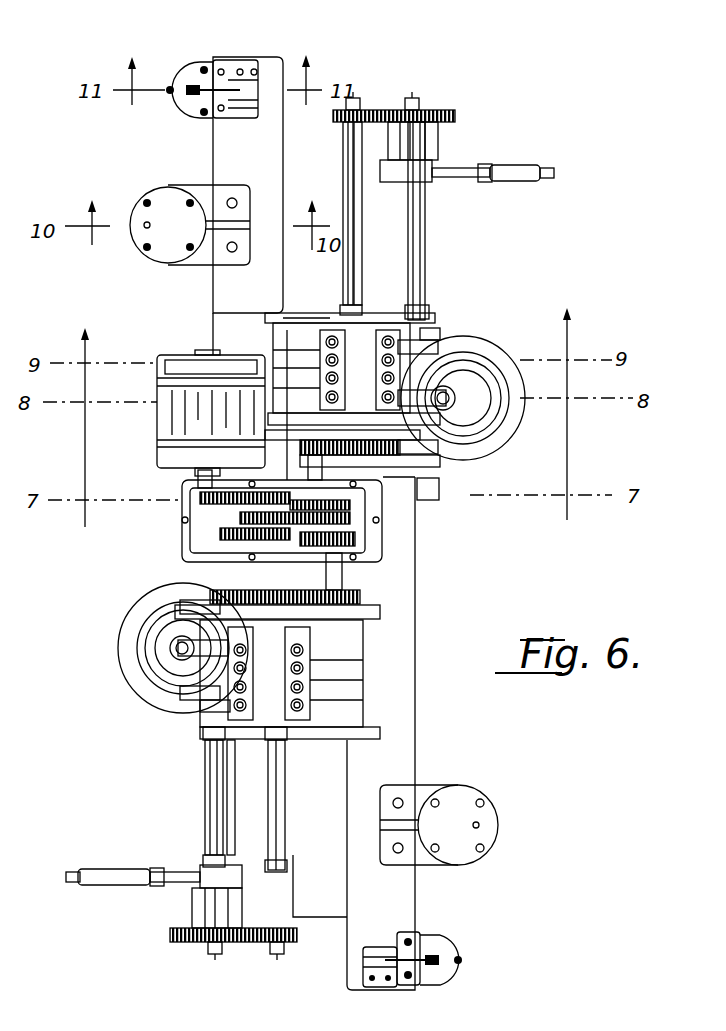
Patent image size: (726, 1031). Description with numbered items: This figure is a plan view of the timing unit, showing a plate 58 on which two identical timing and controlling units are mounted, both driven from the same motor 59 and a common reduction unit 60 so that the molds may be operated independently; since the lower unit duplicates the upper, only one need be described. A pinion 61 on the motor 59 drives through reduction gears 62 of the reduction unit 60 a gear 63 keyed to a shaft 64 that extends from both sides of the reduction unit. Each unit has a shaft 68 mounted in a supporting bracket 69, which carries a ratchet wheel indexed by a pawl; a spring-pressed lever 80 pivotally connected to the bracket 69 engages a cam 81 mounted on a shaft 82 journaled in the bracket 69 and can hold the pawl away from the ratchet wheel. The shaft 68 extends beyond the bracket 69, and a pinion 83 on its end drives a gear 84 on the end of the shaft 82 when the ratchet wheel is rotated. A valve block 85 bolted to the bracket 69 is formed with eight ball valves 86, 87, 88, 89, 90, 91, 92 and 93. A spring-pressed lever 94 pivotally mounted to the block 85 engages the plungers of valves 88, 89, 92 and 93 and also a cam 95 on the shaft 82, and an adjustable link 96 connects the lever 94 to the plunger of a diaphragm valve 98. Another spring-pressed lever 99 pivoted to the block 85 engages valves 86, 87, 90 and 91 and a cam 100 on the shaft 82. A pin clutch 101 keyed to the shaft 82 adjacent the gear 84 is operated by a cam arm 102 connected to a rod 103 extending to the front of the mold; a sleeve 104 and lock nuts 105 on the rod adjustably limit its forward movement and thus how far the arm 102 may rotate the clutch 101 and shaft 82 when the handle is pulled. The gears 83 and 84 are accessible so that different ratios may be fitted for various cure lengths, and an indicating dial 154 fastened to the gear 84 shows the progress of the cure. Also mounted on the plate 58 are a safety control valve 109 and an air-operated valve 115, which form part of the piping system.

The plate 58 is at (390, 585).
The motor 59 is at (195, 415).
The reduction unit 60 is at (182, 540).
The pinion 61 is at (205, 485).
The reduction gears 62 is at (200, 512).
The gear 63 is at (383, 538).
The shaft 64 is at (417, 490).
The shaft 68 is at (345, 260).
The supporting bracket 69 is at (285, 315).
The spring-pressed lever 80 is at (470, 462).
The cam 81 is at (485, 438).
The shaft 82 is at (420, 290).
The pinion 83 is at (350, 98).
The gear 84 is at (455, 115).
The valve block 85 is at (358, 295).
The valve 86 is at (332, 335).
The valve 87 is at (326, 360).
The valve 88 is at (326, 378).
The valve 89 is at (326, 397).
The valve 90 is at (388, 335).
The valve 91 is at (382, 360).
The valve 92 is at (382, 378).
The valve 93 is at (382, 397).
The spring-pressed lever 94 is at (460, 350).
The cam 95 is at (470, 360).
The adjustable link 96 is at (480, 412).
The diaphragm valve 98 is at (470, 392).
The spring-pressed lever 99 is at (440, 335).
The cam 100 is at (440, 345).
The pin clutch 101 is at (440, 140).
The cam arm 102 is at (435, 182).
The rod 103 is at (545, 180).
The sleeve 104 is at (535, 165).
The lock nuts 105 is at (485, 185).
The safety control valve 109 is at (205, 60).
The air-operated valve 115 is at (162, 185).
The indicating dial 154 is at (420, 110).